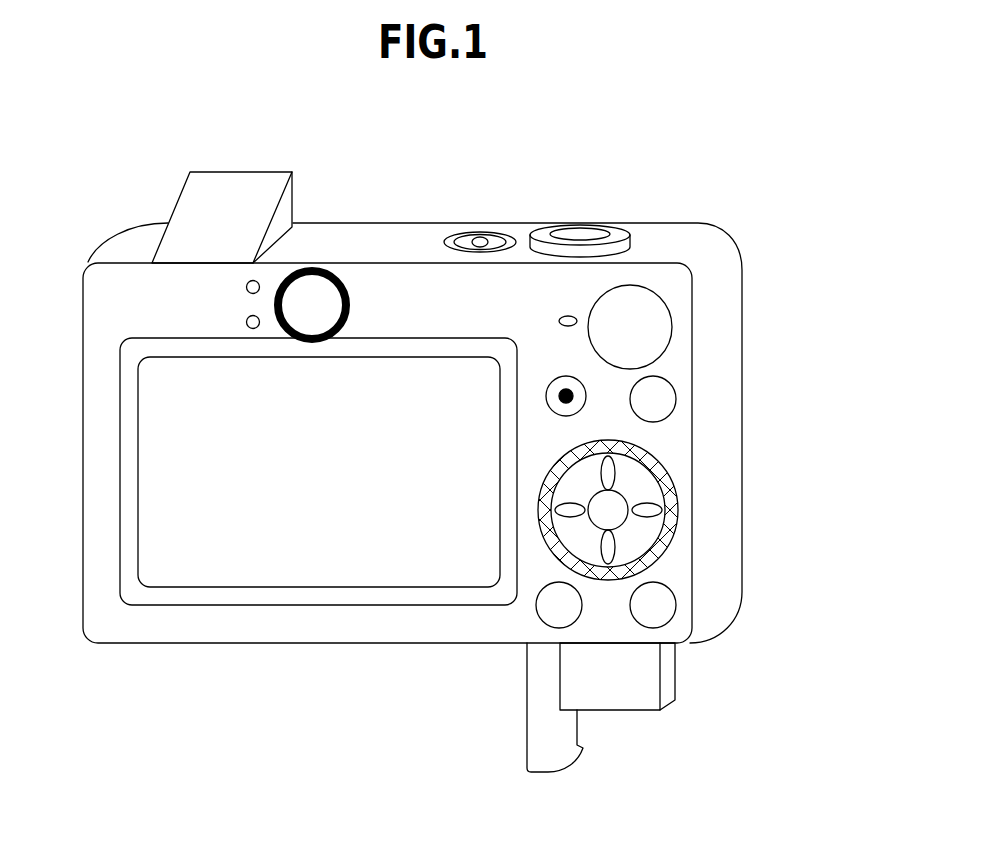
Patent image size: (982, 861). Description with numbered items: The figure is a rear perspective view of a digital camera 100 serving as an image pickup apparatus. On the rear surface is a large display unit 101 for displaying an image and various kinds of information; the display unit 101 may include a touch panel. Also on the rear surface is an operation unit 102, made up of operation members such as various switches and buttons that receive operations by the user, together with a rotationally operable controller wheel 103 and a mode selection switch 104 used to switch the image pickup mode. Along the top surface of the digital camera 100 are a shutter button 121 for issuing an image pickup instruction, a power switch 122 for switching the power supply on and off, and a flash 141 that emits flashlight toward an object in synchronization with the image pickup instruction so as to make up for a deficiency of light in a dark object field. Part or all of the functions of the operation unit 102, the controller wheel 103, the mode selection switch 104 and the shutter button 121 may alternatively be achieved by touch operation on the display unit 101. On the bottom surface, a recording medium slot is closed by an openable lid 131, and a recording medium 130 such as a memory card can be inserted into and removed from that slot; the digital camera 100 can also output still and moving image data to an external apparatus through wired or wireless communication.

The digital camera 100 is at (222, 678).
The display unit 101 is at (327, 568).
The operation unit 102 is at (580, 255).
The controller wheel 103 is at (558, 558).
The mode selection switch 104 is at (652, 305).
The shutter button 121 is at (582, 227).
The power switch 122 is at (480, 236).
The recording medium 130 is at (630, 697).
The lid 131 is at (557, 755).
The flash 141 is at (233, 185).